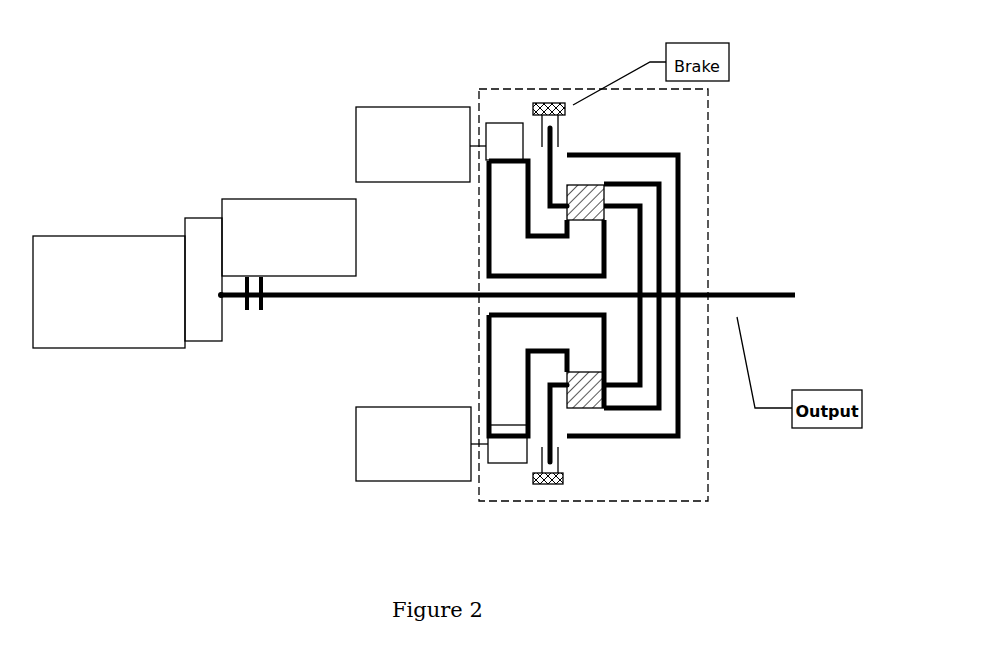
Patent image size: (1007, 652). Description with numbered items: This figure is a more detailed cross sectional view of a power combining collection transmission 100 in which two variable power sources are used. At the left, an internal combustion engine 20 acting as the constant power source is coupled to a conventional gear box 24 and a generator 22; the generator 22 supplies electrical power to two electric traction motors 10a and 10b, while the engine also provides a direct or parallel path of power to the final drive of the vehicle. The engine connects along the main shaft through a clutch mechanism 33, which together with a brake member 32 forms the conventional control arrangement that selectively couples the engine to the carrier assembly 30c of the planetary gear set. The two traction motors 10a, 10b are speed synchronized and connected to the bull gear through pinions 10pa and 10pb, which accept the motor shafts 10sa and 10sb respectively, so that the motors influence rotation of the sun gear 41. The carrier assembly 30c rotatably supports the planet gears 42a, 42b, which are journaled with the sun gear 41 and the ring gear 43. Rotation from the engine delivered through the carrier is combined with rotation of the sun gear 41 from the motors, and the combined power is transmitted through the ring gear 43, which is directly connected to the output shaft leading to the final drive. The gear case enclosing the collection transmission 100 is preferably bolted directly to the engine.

The constant power source 20 is at (105, 236).
The generator 22 is at (295, 198).
The gear box 24 is at (202, 217).
The clutch mechanism 33 is at (272, 303).
The electric traction motor 10a is at (413, 107).
The shaft of electric traction motor 10sa is at (475, 137).
The pinion 10pa is at (502, 115).
The electric traction motor 10b is at (390, 493).
The shaft of electric traction motor 10sb is at (475, 450).
The pinion 10pb is at (510, 477).
The brake member 32 is at (552, 103).
The sun gear 41 is at (562, 337).
The planet gear 42a is at (610, 197).
The planet gear 42b is at (607, 397).
The carrier assembly 30c is at (643, 242).
The ring gear 43 is at (686, 275).
The power combining collection transmission system 100 is at (603, 507).